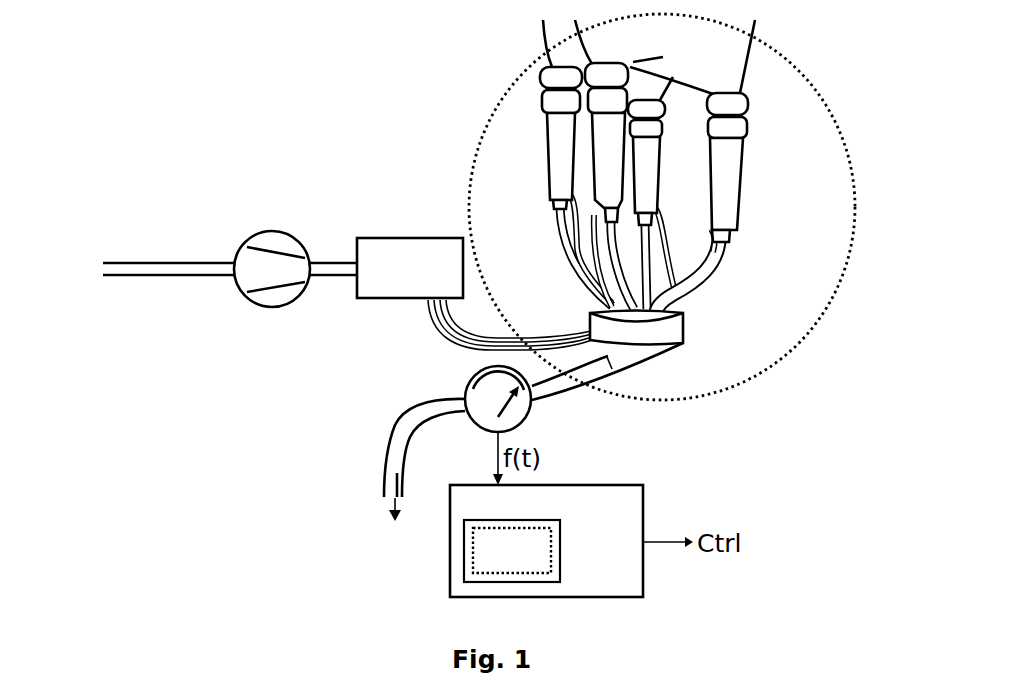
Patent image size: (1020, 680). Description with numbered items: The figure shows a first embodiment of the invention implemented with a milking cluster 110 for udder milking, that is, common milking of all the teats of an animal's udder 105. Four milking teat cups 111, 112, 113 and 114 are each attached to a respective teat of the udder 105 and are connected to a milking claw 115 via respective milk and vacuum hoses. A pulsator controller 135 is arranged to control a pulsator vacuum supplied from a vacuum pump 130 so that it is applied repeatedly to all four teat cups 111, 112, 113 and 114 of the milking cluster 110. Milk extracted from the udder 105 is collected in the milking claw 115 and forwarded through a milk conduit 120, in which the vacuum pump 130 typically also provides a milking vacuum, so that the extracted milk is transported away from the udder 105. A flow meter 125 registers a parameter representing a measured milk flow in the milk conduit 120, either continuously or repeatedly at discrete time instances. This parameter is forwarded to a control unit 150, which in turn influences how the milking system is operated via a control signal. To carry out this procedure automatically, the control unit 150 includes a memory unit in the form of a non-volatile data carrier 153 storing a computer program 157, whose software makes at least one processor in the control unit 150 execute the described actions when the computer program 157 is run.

The udder 105 is at (562, 35).
The milking cluster 110 is at (720, 392).
The teat cup 111 is at (558, 183).
The teat cup 112 is at (607, 197).
The teat cup 113 is at (723, 198).
The teat cup 114 is at (648, 168).
The milking claw 115 is at (680, 340).
The milk conduit 120 is at (548, 382).
The flow meter 125 is at (467, 382).
The vacuum pump 130 is at (230, 243).
The pulsator controller 135 is at (447, 238).
The control unit 150 is at (643, 575).
The non-volatile data carrier 153 is at (464, 538).
The computer program 157 is at (473, 567).